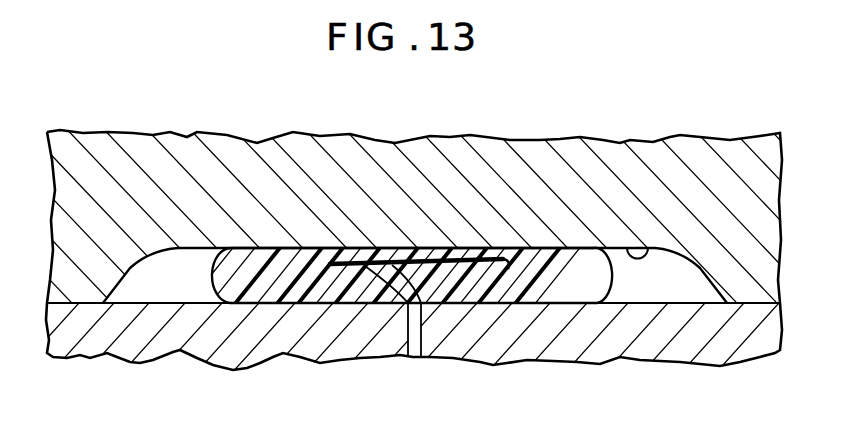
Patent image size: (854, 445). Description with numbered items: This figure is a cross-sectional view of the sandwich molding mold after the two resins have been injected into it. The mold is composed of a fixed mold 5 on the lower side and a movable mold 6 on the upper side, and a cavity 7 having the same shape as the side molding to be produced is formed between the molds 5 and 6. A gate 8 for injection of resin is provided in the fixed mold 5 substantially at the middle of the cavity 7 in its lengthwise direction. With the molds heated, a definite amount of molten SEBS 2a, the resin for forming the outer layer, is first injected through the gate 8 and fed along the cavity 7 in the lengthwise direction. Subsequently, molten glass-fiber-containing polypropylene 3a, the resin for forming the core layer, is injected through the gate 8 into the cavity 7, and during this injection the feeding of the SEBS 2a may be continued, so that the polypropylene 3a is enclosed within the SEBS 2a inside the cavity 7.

The movable mold 6 is at (556, 155).
The fixed mold 5 is at (633, 342).
The molten SEBS 2a is at (588, 280).
The molten glass-fiber-containing polypropylene 3a is at (456, 276).
The cavity 7 is at (627, 247).
The gate 8 is at (418, 343).